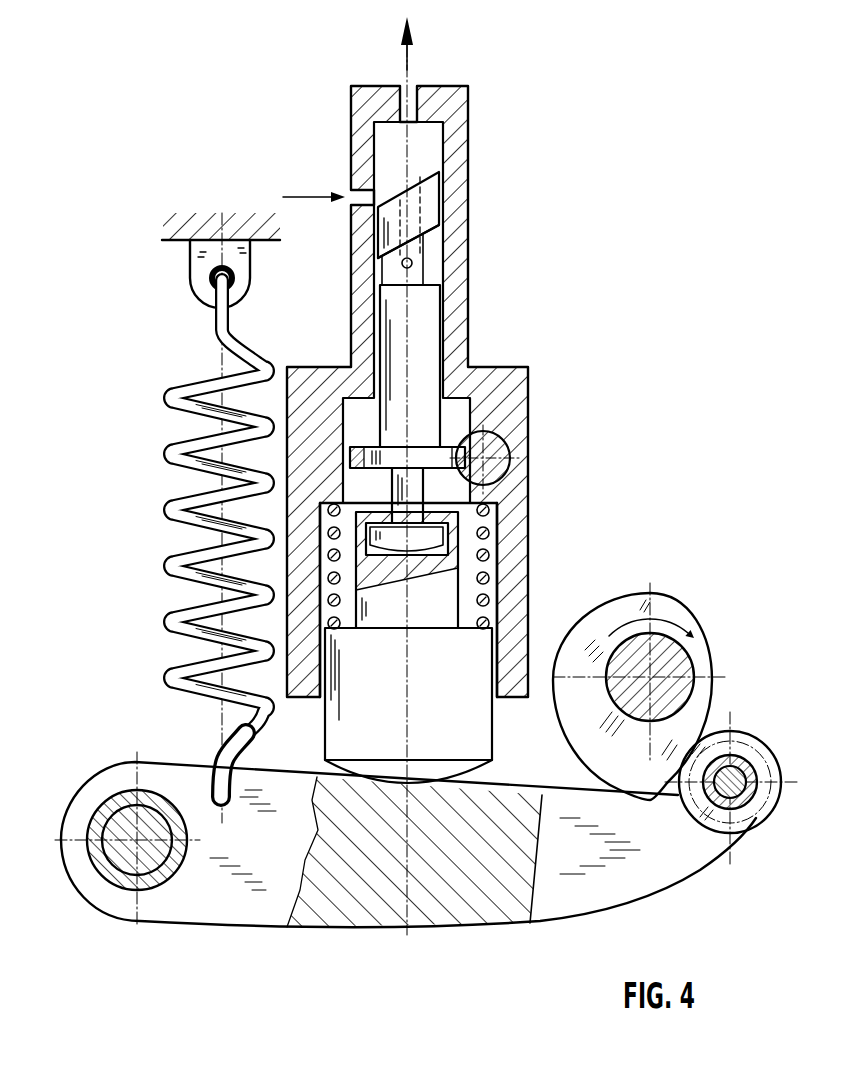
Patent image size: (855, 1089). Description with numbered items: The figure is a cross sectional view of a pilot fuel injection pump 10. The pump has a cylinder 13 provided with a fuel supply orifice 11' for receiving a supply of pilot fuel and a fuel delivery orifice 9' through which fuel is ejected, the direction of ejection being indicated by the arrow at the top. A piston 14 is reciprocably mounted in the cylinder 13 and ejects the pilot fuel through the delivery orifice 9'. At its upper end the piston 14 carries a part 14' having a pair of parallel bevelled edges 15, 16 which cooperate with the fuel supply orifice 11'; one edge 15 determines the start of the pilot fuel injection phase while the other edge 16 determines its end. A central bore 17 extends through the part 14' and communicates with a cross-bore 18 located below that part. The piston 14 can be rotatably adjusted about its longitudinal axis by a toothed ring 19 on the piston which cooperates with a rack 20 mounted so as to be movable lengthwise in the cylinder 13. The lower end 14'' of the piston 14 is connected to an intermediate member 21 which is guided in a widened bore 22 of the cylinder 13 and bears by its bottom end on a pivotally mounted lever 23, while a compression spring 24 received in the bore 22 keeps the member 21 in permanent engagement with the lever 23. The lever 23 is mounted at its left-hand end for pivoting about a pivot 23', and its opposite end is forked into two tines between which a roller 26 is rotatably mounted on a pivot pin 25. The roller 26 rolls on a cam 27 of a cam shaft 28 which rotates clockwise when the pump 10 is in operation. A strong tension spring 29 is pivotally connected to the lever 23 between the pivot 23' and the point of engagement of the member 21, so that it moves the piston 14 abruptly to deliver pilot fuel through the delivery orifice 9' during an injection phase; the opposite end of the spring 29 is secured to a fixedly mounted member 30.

The fuel delivery orifice 9' is at (426, 52).
The injection pump 10 is at (488, 281).
The fuel supply orifice 11' is at (314, 175).
The cylinder 13 is at (460, 141).
The piston 14 is at (453, 366).
The part at upper end of piston 14' is at (451, 215).
The lower end of piston 14'' is at (481, 524).
The bevelled edge 15 is at (420, 177).
The bevelled edge 16 is at (433, 230).
The central bore 17 is at (403, 213).
The cross-bore 18 is at (402, 263).
The toothed ring 19 is at (362, 468).
The rack 20 is at (497, 452).
The intermediate member 21 is at (438, 598).
The widened bore 22 is at (505, 540).
The lever 23 is at (408, 873).
The pivot 23' is at (127, 809).
The compression spring 24 is at (485, 598).
The pivot pin 25 is at (740, 770).
The roller 26 is at (743, 733).
The cam 27 is at (667, 610).
The cam shaft 28 is at (670, 663).
The tension spring 29 is at (172, 510).
The fixedly mounted member 30 is at (203, 250).